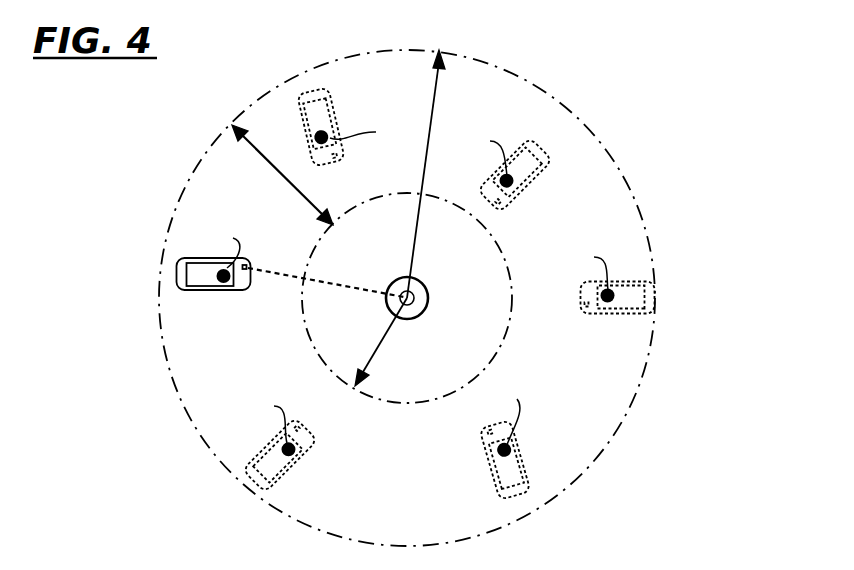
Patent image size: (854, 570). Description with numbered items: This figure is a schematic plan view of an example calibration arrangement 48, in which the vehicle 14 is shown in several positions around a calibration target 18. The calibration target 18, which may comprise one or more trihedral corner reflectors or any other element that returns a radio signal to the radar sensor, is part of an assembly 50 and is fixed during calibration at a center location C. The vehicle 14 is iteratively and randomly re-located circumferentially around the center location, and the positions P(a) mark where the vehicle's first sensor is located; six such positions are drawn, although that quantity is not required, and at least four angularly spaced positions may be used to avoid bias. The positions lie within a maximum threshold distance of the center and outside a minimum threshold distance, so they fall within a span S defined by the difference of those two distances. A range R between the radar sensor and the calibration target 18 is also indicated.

The vehicle 14 is at (213, 292).
The calibration target 18 is at (427, 294).
The calibration arrangement 48 is at (722, 157).
The assembly 50 is at (422, 313).